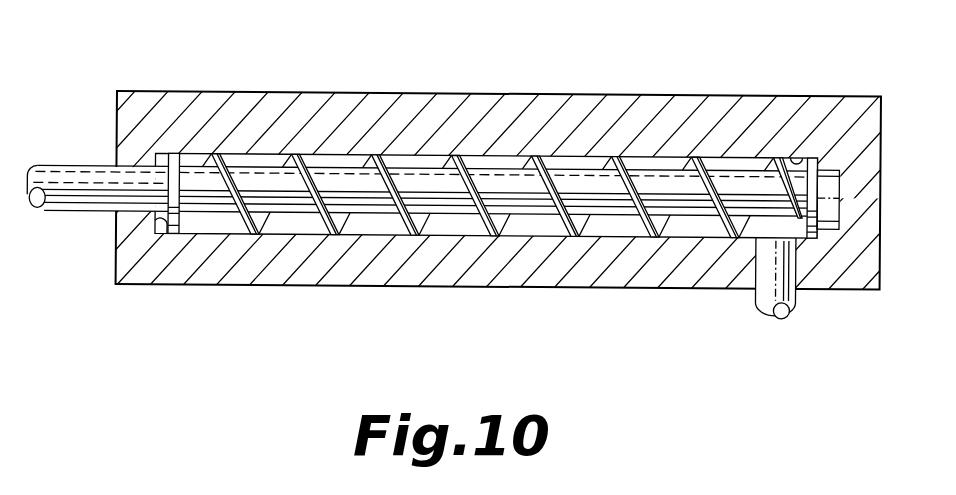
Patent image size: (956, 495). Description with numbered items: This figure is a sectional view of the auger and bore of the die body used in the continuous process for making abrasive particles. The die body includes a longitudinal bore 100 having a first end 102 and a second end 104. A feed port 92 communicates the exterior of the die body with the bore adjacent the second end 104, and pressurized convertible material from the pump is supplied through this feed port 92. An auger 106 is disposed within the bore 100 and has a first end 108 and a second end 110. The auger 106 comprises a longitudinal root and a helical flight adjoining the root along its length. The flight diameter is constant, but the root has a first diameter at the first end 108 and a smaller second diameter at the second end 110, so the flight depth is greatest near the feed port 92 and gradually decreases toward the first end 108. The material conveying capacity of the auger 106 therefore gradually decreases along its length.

The feed port 92 is at (757, 300).
The longitudinal bore 100 is at (541, 231).
The first end of the bore 102 is at (154, 221).
The second end of the bore 104 is at (799, 158).
The auger 106 is at (87, 178).
The first end of the auger 108 is at (209, 226).
The second end of the auger 110 is at (752, 180).